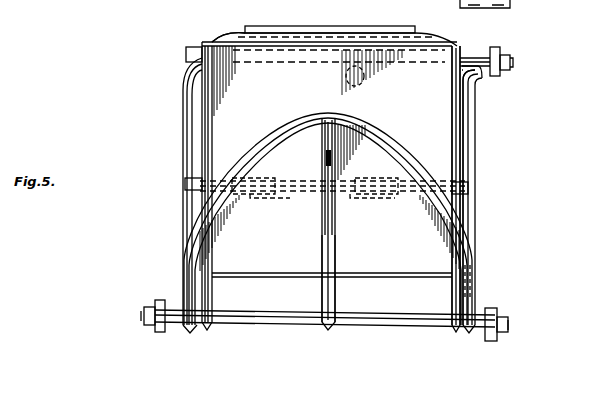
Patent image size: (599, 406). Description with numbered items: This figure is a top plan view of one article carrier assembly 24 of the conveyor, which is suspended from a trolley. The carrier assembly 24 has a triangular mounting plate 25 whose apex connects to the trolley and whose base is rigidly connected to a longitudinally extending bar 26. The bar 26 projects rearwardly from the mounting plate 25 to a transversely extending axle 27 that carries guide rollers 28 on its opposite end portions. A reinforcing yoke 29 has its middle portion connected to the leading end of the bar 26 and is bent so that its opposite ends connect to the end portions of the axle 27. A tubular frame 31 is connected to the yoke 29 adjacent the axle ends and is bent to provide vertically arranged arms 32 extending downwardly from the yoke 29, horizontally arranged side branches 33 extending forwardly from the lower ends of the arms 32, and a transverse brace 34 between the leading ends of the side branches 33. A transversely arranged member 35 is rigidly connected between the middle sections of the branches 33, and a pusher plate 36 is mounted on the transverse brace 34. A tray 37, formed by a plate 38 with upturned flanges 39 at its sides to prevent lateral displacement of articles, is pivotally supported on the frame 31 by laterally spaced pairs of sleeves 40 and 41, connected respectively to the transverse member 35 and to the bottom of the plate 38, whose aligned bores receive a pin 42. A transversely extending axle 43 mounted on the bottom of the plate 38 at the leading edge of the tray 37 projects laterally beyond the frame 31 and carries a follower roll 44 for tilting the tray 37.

The carrier assembly 24 is at (488, 151).
The triangular mounting plate 25 is at (332, 165).
The longitudinally extending bar 26 is at (336, 252).
The transversely extending axle 27 is at (257, 324).
The guide rollers 28 is at (160, 333).
The reinforcing yoke 29 is at (373, 140).
The tubular frame 31 is at (240, 24).
The vertically arranged arms 32 is at (190, 293).
The side branches 33 is at (186, 105).
The transverse brace 34 is at (428, 41).
The transversely arranged member 35 is at (470, 188).
The pusher plate 36 is at (336, 26).
The tray 37 is at (473, 121).
The plate 38 is at (306, 96).
The upturned flanges 39 is at (209, 107).
The sleeves 40 is at (235, 194).
The sleeves 41 is at (272, 196).
The pin 42 is at (303, 181).
The transversely extending axle 43 is at (356, 80).
The follower roll 44 is at (500, 72).